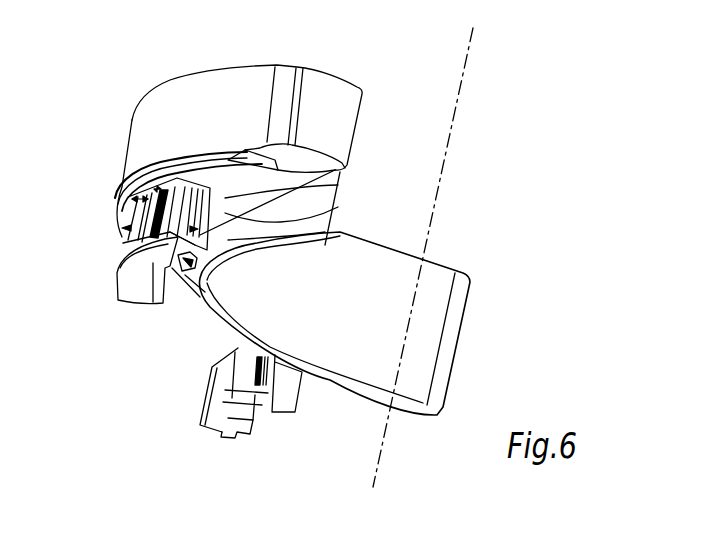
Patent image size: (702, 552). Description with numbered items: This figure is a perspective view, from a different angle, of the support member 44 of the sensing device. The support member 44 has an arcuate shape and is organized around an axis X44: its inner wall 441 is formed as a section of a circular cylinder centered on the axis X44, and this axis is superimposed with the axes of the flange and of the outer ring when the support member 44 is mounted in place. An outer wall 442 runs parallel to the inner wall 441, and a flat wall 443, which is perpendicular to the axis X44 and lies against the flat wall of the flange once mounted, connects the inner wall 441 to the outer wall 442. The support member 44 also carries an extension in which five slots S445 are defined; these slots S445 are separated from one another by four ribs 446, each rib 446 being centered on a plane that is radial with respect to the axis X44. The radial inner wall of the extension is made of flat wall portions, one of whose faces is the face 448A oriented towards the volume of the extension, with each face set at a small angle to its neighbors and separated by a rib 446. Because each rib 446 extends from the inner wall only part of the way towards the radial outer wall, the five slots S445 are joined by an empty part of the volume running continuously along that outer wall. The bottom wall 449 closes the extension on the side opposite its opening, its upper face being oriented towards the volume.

The support member 44 is at (477, 318).
The inner wall 441 is at (432, 278).
The outer wall 442 is at (138, 131).
The flat wall 443 is at (240, 176).
The slots S445 is at (124, 228).
The ribs 446 is at (328, 222).
The face of radial inner wall portion 448A is at (165, 303).
The bottom wall 449 is at (137, 290).
The axis X44 is at (421, 270).